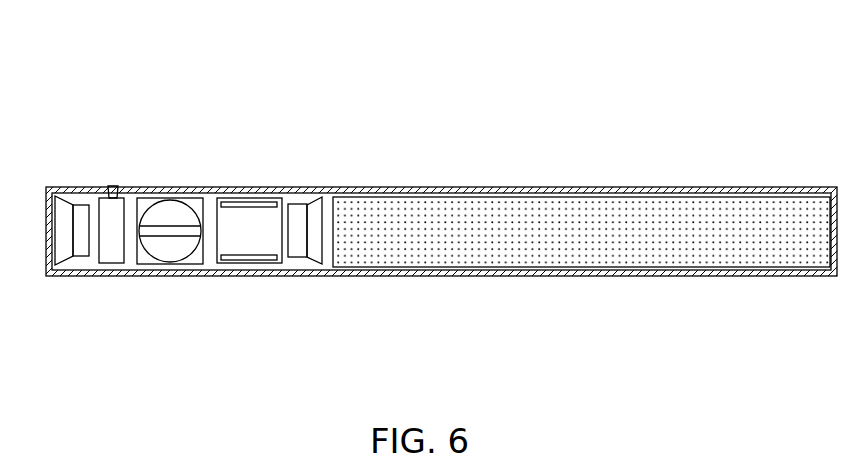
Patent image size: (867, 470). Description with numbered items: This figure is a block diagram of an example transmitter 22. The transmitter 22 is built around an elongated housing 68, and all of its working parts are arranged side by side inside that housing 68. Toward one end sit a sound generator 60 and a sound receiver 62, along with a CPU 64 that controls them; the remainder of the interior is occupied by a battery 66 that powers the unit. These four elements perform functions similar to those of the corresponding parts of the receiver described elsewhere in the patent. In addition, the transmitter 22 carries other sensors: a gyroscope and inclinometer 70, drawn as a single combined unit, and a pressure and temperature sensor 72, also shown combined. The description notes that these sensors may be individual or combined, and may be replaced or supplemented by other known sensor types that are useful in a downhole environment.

The transmitter 22 is at (437, 210).
The sound generator 60 is at (73, 252).
The sound receiver 62 is at (310, 226).
The CPU 64 is at (262, 230).
The battery 66 is at (540, 252).
The housing 68 is at (600, 277).
The gyroscope and inclinometer 70 is at (173, 232).
The pressure and temperature sensor 72 is at (113, 227).